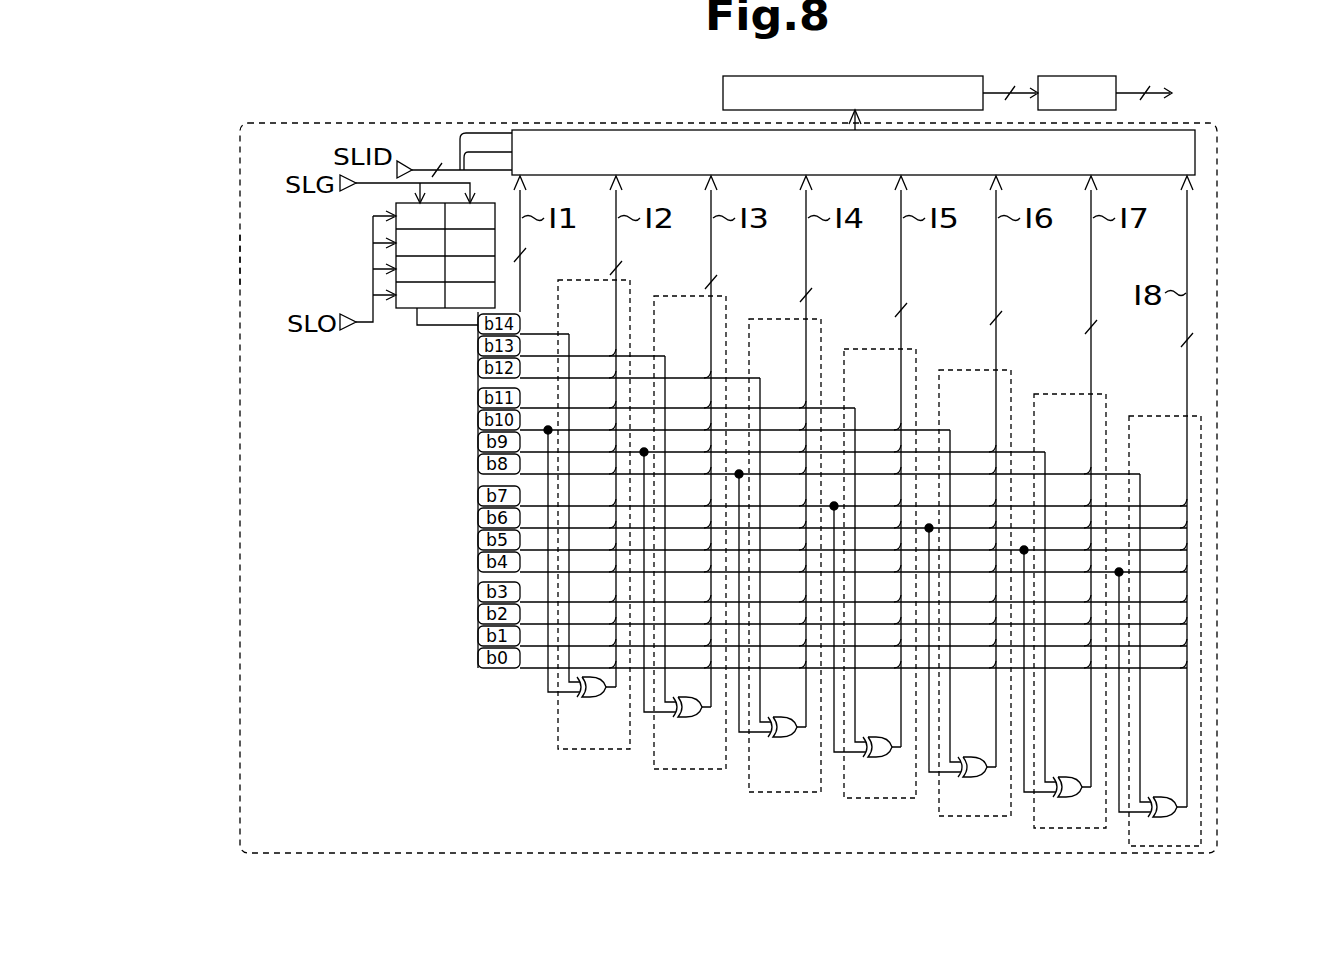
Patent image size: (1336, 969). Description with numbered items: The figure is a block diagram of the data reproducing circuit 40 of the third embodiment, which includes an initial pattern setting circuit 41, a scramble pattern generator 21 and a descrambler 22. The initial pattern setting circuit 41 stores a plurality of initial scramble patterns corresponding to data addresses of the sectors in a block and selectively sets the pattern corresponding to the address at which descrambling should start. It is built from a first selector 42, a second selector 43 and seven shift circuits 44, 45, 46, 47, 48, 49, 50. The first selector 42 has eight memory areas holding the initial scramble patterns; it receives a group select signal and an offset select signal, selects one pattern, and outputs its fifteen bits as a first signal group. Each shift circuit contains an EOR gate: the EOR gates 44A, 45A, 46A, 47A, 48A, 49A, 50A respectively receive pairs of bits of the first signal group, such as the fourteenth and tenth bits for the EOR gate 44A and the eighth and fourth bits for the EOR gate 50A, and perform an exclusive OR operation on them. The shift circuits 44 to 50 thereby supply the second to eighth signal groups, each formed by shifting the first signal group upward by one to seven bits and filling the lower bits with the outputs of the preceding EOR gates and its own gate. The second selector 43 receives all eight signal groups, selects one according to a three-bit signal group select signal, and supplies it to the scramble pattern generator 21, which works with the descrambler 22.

The scramble pattern generator 21 is at (723, 93).
The descrambler 22 is at (1118, 112).
The data reproducing circuit 40 is at (330, 110).
The initial pattern setting circuit 41 is at (240, 258).
The first selector 42 is at (398, 334).
The second selector 43 is at (1197, 152).
The shift circuit 44 is at (570, 516).
The shift circuit 45 is at (665, 541).
The shift circuit 46 is at (760, 562).
The shift circuit 47 is at (861, 587).
The shift circuit 48 is at (952, 602).
The shift circuit 49 is at (1046, 621).
The shift circuit 50 is at (1140, 635).
The EOR gate 44A is at (597, 697).
The EOR gate 45A is at (675, 553).
The EOR gate 46A is at (770, 574).
The EOR gate 47A is at (883, 757).
The EOR gate 48A is at (978, 777).
The EOR gate 49A is at (1073, 797).
The EOR gate 50A is at (1168, 817).